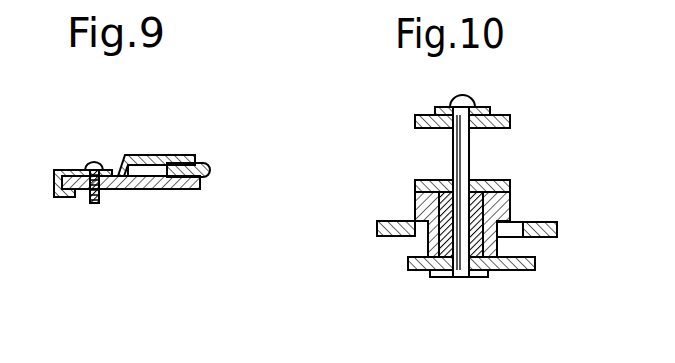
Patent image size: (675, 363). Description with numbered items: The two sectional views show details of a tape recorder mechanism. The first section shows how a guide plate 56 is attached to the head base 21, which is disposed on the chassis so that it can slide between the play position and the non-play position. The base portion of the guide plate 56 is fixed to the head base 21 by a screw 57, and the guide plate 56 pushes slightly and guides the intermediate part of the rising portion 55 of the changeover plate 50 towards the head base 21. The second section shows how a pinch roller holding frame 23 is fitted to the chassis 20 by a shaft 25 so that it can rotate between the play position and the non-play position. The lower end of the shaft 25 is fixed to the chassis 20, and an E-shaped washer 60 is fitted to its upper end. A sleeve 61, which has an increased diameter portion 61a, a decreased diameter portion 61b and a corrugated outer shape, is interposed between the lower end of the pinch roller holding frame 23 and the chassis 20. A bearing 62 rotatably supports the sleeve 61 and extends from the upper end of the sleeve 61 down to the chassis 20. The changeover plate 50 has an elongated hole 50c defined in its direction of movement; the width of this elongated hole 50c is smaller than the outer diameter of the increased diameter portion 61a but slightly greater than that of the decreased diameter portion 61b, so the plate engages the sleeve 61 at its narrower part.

In FIG. 9, the head base 21 is at (157, 190).
In FIG. 9, the rising portion 55 is at (205, 162).
In FIG. 9, the guide plate 56 is at (160, 155).
In FIG. 9, the screw 57 is at (95, 163).
In FIG. 10, the chassis 20 is at (520, 271).
In FIG. 10, the pinch roller holding frame 23 is at (512, 128).
In FIG. 10, the shaft 25 is at (455, 156).
In FIG. 10, the changeover plate 50 is at (540, 240).
In FIG. 10, the elongated hole 50c is at (518, 227).
In FIG. 10, the E-shaped washer 60 is at (478, 100).
In FIG. 10, the sleeve 61 is at (510, 212).
In FIG. 10, the increased diameter portion 61a is at (415, 202).
In FIG. 10, the decreased diameter portion 61b is at (425, 240).
In FIG. 10, the bearing 62 is at (462, 278).